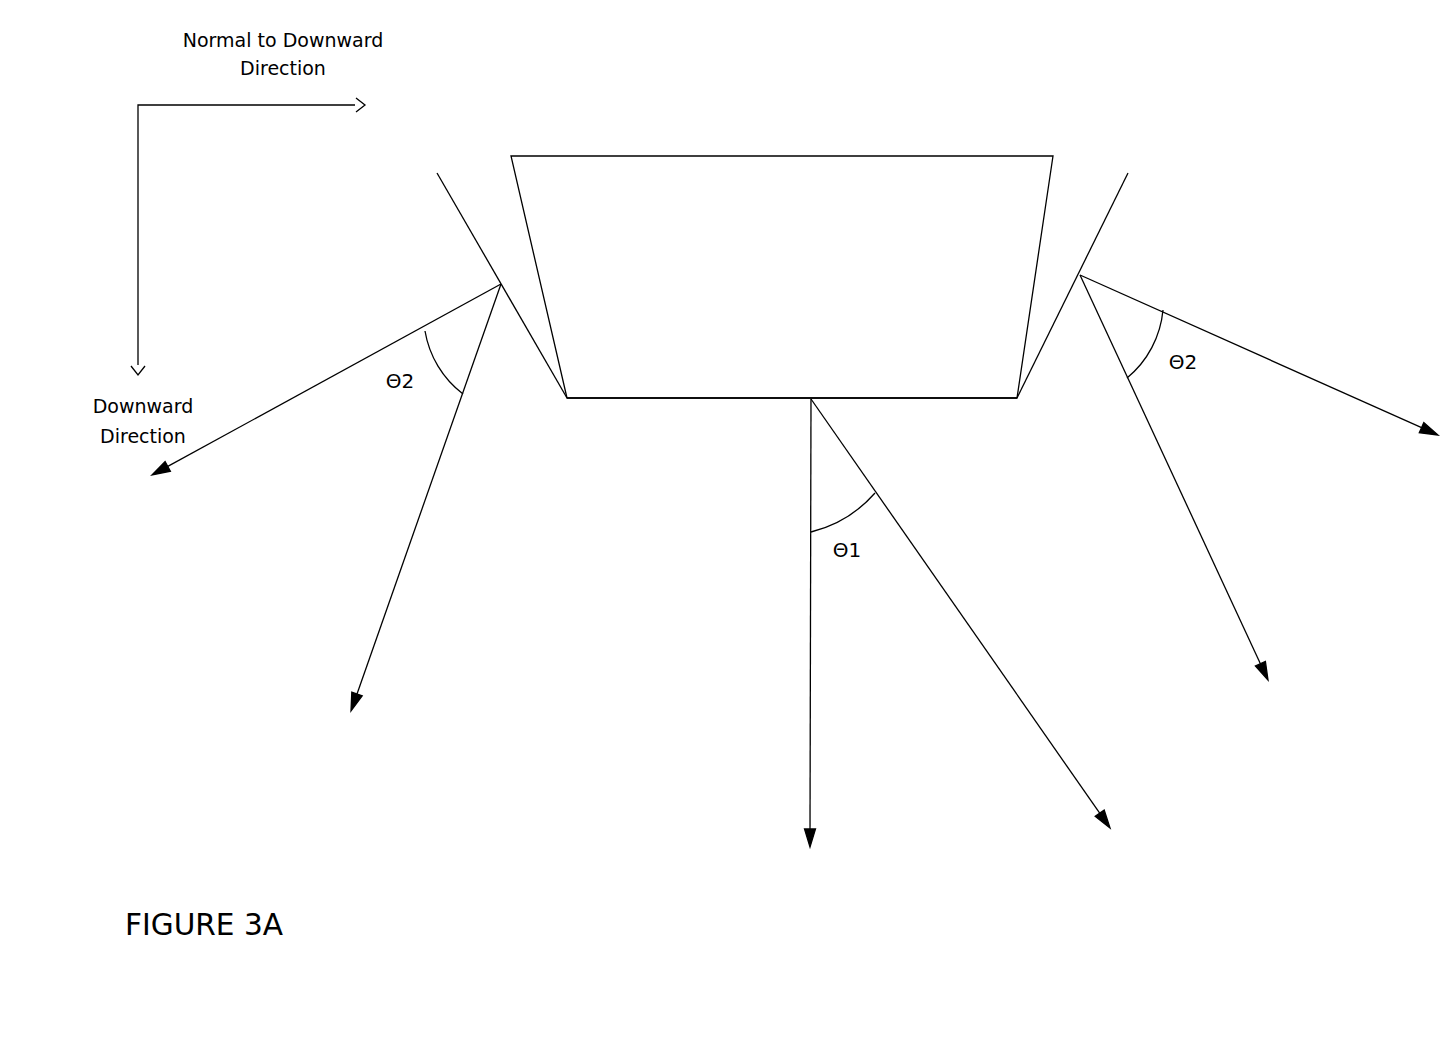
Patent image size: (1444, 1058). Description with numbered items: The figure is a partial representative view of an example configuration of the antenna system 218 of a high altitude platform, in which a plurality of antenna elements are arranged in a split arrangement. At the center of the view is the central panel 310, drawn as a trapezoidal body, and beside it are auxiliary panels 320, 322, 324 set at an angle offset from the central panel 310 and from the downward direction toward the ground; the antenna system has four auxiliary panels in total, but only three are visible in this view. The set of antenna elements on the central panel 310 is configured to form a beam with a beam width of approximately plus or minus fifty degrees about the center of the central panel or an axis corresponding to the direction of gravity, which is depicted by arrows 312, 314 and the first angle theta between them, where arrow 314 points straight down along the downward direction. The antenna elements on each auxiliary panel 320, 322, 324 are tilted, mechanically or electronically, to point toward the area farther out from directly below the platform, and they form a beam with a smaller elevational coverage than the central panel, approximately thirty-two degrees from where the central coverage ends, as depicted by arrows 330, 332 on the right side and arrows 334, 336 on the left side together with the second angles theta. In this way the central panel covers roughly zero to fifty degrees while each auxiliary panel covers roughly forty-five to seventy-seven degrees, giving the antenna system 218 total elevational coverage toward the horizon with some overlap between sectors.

The antenna system 218 is at (988, 116).
The central panel 310 is at (908, 410).
The arrow 312 is at (960, 613).
The arrow 314 is at (789, 623).
The auxiliary panel 320 is at (1132, 208).
The auxiliary panel 322 is at (782, 277).
The auxiliary panel 324 is at (442, 233).
The arrow 330 is at (1259, 355).
The arrow 332 is at (1174, 477).
The arrow 334 is at (426, 497).
The arrow 336 is at (326, 379).